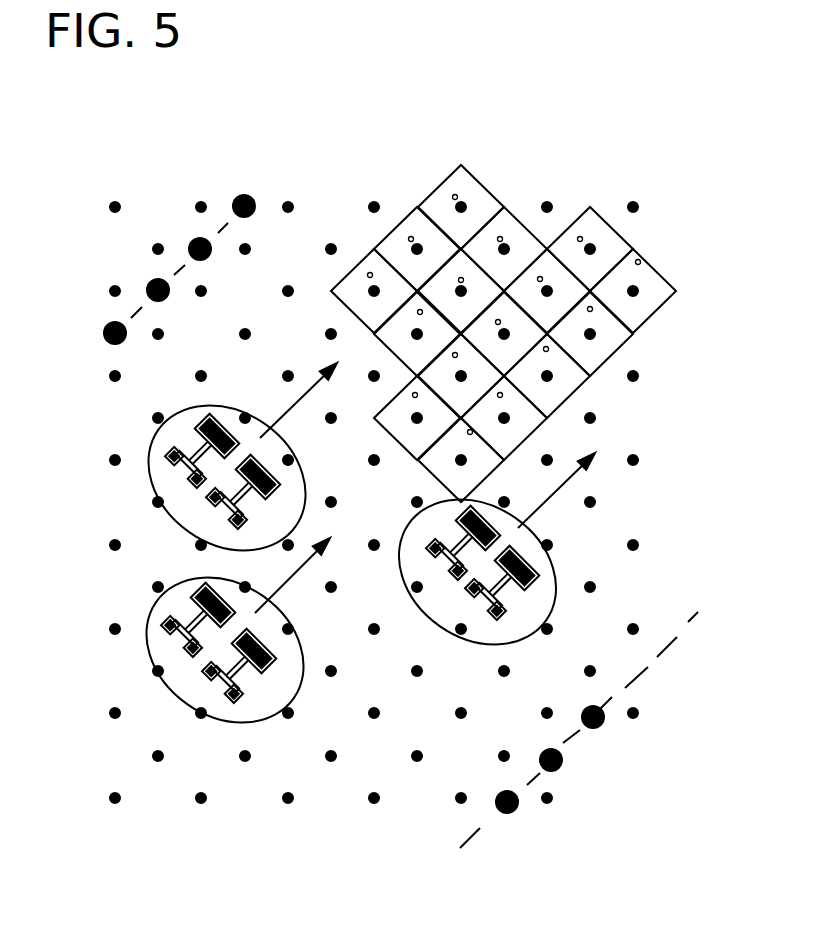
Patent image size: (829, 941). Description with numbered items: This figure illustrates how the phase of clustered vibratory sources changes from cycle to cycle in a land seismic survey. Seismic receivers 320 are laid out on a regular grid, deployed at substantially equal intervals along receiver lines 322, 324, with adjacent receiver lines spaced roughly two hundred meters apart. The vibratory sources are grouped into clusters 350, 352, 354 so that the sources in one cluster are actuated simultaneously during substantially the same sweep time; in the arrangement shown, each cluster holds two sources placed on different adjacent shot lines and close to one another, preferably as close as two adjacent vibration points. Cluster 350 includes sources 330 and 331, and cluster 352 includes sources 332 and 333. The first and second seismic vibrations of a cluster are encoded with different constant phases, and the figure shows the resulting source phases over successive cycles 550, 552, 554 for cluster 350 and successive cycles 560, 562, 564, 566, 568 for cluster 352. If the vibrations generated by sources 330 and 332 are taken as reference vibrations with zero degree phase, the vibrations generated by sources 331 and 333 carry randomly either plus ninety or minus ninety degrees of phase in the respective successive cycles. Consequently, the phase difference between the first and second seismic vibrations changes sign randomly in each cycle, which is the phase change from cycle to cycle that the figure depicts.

The seismic receivers 320 is at (118, 330).
The receiver line 322 is at (220, 228).
The receiver line 324 is at (635, 680).
The vibratory source 330 is at (218, 427).
The vibratory source 331 is at (243, 493).
The vibratory source 332 is at (193, 623).
The vibratory source 333 is at (235, 668).
The cluster 350 is at (234, 467).
The cluster 352 is at (236, 665).
The cluster 354 is at (462, 638).
The cycle 550 is at (360, 265).
The cycle 552 is at (405, 224).
The cycle 554 is at (447, 183).
The cycle 560 is at (503, 457).
The cycle 562 is at (503, 312).
The cycle 564 is at (535, 278).
The cycle 566 is at (568, 245).
The cycle 568 is at (650, 315).